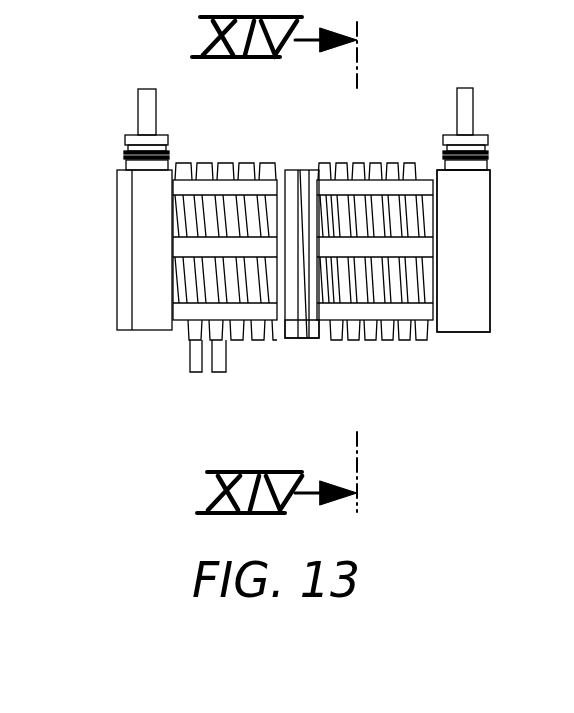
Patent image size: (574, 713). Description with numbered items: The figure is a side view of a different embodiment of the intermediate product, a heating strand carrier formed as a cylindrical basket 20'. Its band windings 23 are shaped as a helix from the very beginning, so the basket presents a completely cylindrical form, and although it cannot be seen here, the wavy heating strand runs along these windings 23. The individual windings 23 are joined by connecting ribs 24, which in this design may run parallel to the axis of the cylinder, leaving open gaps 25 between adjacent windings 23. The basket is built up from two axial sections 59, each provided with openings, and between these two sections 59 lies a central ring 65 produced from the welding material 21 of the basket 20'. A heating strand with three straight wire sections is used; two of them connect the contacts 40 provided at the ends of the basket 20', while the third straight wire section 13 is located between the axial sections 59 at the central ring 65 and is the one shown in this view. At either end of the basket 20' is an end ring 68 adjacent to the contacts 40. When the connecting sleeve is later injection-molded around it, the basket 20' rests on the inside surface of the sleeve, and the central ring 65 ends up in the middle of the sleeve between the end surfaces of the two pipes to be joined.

The straight wire section 13 is at (303, 168).
The cylindrical basket 20' is at (390, 189).
The welding material 21 is at (470, 313).
The band windings 23 is at (219, 373).
The connecting rib 24 is at (385, 188).
The open gap 25 is at (252, 342).
The contact 40 is at (526, 103).
The axial section 59 is at (172, 152).
The central ring 65 is at (288, 342).
The end ring 68 is at (117, 336).